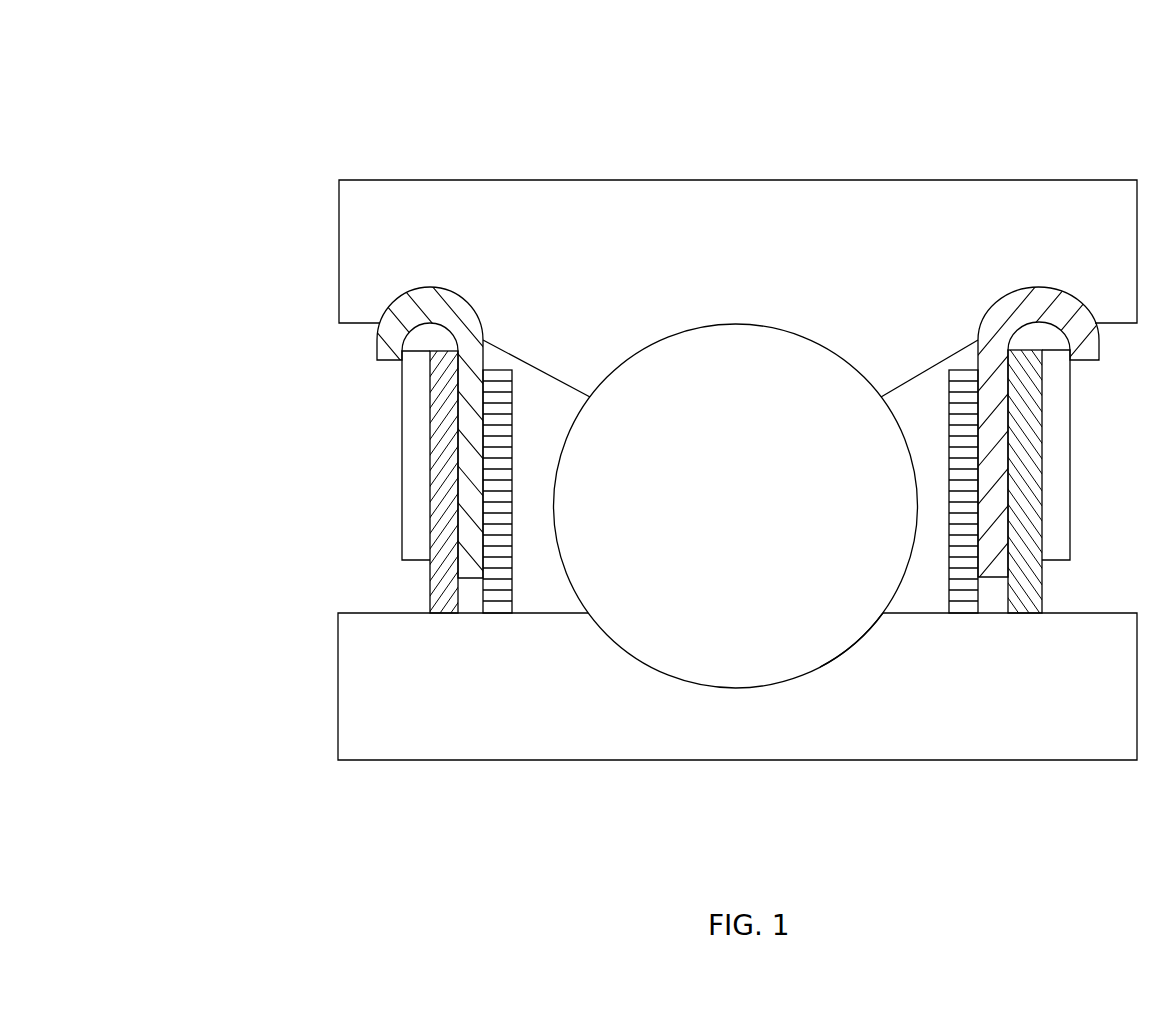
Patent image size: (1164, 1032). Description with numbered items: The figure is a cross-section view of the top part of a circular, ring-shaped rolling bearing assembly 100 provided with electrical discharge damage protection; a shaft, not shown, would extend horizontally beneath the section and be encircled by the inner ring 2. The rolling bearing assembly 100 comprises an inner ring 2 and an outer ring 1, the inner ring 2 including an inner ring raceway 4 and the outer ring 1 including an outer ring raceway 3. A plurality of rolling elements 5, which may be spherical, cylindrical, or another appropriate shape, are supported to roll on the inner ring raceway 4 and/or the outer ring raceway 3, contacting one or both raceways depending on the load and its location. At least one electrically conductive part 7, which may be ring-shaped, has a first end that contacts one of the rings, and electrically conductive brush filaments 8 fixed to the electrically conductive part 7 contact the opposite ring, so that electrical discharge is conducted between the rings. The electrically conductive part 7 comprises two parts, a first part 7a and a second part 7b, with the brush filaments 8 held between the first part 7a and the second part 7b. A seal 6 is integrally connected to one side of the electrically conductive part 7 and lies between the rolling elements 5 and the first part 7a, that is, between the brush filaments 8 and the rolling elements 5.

The rolling bearing assembly 100 is at (156, 82).
The outer ring 1 is at (592, 178).
The inner ring 2 is at (338, 714).
The outer ring raceway 3 is at (785, 328).
The inner ring raceway 4 is at (858, 638).
The rolling elements 5 is at (723, 432).
The seal 6 is at (512, 583).
The electrically conductive part 7 is at (587, 444).
The first part 7a is at (376, 358).
The second part 7b is at (398, 400).
The brush filaments 8 is at (430, 578).